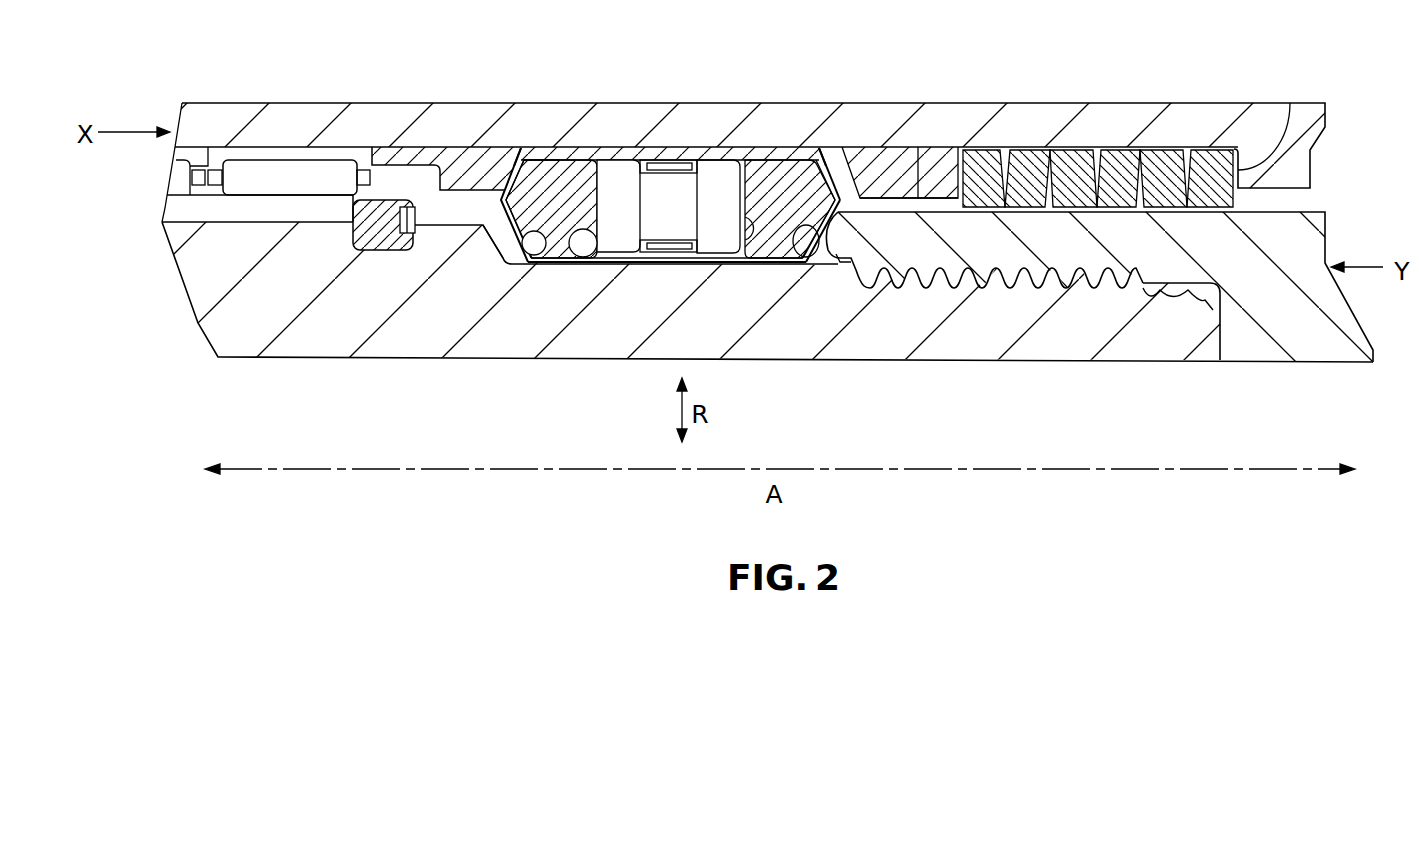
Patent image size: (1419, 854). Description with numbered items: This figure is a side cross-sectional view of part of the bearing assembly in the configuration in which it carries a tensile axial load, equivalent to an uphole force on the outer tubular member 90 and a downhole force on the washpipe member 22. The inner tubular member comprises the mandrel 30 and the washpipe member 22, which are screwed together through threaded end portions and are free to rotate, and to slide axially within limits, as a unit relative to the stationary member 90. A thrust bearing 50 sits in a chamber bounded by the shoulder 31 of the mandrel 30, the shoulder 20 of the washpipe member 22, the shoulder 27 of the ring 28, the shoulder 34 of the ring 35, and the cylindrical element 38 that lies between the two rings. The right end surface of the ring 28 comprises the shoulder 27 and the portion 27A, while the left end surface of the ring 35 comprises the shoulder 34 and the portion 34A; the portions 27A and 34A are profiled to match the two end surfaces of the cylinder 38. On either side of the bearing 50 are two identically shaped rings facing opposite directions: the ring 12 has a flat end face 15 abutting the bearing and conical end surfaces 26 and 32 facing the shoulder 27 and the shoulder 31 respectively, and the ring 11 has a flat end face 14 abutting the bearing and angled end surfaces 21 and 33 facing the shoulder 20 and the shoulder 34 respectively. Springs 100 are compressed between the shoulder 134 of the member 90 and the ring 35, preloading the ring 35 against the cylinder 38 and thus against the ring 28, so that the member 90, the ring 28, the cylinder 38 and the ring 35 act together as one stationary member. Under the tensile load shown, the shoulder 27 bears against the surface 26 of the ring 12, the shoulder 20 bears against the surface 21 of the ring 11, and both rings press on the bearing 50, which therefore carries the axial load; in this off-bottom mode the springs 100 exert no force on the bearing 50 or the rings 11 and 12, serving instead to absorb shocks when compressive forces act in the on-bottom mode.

The outer tubular member 90 is at (327, 113).
The ring 28 is at (457, 158).
The shoulder 27 is at (498, 162).
The portion 27A is at (546, 158).
The end surface 26 is at (550, 160).
The cylindrical element 38 is at (662, 152).
The end surface 33 is at (803, 172).
The portion 34A is at (822, 158).
The shoulder 34 is at (858, 162).
The ring 35 is at (898, 163).
The springs 100 is at (990, 150).
The shoulder 134 is at (1285, 103).
The ring 12 is at (565, 219).
The thrust bearing 50 is at (655, 221).
The ring 11 is at (795, 224).
The mandrel 30 is at (340, 318).
The shoulder 31 is at (492, 243).
The end surface 32 is at (548, 263).
The flat end face 15 is at (577, 263).
The flat end face 14 is at (752, 262).
The end surface 21 is at (790, 265).
The shoulder 20 is at (853, 263).
The washpipe member 22 is at (1003, 250).